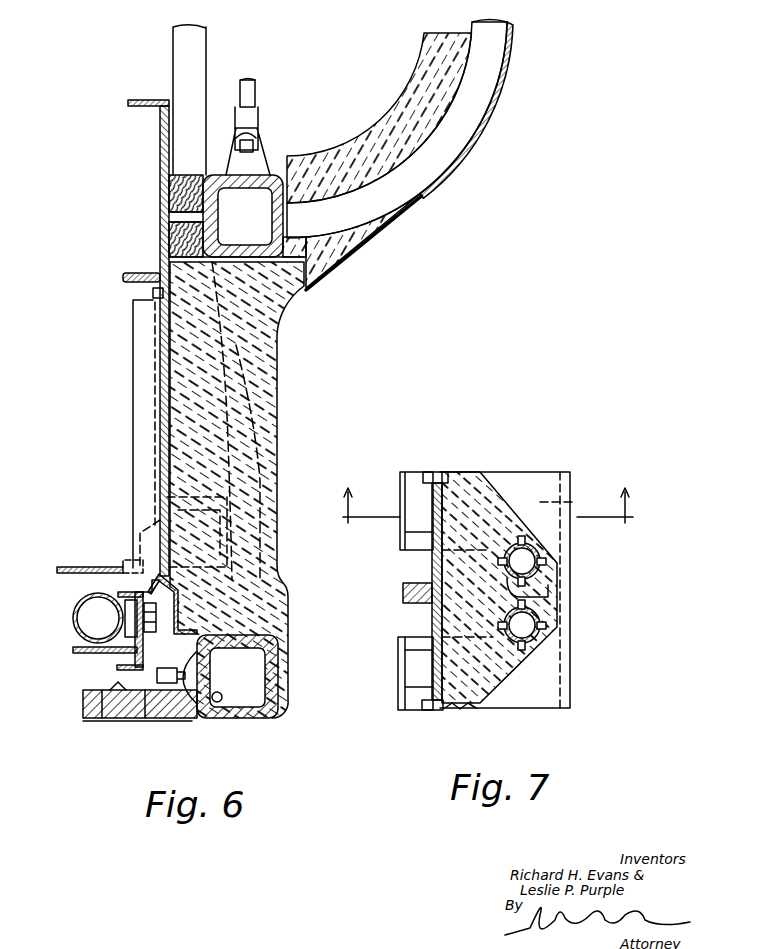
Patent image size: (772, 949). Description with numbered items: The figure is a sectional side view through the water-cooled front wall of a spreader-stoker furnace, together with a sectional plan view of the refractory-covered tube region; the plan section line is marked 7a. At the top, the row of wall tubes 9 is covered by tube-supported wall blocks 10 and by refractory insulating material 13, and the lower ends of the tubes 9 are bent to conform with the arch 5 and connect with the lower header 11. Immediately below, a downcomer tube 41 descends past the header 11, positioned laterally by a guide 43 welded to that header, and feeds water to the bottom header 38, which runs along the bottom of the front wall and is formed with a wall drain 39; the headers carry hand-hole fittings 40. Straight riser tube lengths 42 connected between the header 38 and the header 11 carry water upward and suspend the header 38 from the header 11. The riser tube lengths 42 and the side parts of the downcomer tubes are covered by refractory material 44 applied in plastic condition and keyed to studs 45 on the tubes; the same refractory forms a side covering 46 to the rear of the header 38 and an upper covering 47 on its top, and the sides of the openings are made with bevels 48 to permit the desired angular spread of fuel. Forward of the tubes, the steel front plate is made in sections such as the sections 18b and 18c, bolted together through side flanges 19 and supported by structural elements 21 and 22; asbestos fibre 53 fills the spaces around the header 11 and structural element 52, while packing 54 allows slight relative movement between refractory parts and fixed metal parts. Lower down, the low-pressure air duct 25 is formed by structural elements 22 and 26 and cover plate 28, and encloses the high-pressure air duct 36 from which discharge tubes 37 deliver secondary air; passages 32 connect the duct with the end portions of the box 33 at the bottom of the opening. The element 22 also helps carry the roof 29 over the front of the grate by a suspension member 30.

In FIG. 6, the arch 5 is at (420, 173).
In FIG. 6, the tubes 9 is at (488, 75).
In FIG. 6, the tube-supported wall blocks 10 is at (467, 142).
In FIG. 6, the lower header 11 is at (300, 292).
In FIG. 6, the refractory insulating material 13 is at (430, 82).
In FIG. 7, the plate section 18b is at (430, 533).
In FIG. 6, the plate section 18c is at (153, 293).
In FIG. 7, the plate section 18c is at (430, 660).
In FIG. 6, the side flanges 19 is at (140, 357).
In FIG. 7, the side flanges 19 is at (403, 593).
In FIG. 6, the structural element 21 is at (141, 273).
In FIG. 6, the structural element 22 is at (122, 609).
In FIG. 6, the low-pressure air duct 25 is at (65, 567).
In FIG. 6, the structural element 26 is at (90, 653).
In FIG. 6, the cover plate 28 is at (72, 590).
In FIG. 6, the roof 29 is at (162, 700).
In FIG. 6, the suspension member 30 is at (117, 692).
In FIG. 6, the passages 32 is at (133, 570).
In FIG. 7, the passages 32 is at (420, 498).
In FIG. 6, the box 33 is at (160, 533).
In FIG. 7, the box 33 is at (470, 478).
In FIG. 6, the high-pressure air duct 36 is at (73, 618).
In FIG. 6, the discharge tubes 37 is at (160, 634).
In FIG. 6, the bottom header 38 is at (245, 690).
In FIG. 7, the bottom header 38 is at (540, 502).
In FIG. 6, the wall drain 39 is at (218, 703).
In FIG. 6, the hand-hole fittings 40 is at (252, 170).
In FIG. 6, the downcomer tubes 41 is at (186, 47).
In FIG. 7, the riser tube lengths 42 is at (533, 618).
In FIG. 6, the guides 43 is at (180, 213).
In FIG. 6, the refractory material 44 is at (258, 378).
In FIG. 7, the refractory material 44 is at (503, 661).
In FIG. 7, the studs 45 is at (522, 586).
In FIG. 6, the side covering 46 is at (283, 678).
In FIG. 7, the upper covering 47 is at (531, 490).
In FIG. 7, the bevels 48 is at (537, 545).
In FIG. 6, the structural element 52 is at (162, 140).
In FIG. 6, the asbestos fibre 53 is at (176, 191).
In FIG. 6, the packing 54 is at (161, 470).
In FIG. 7, the section line 7a is at (486, 517).